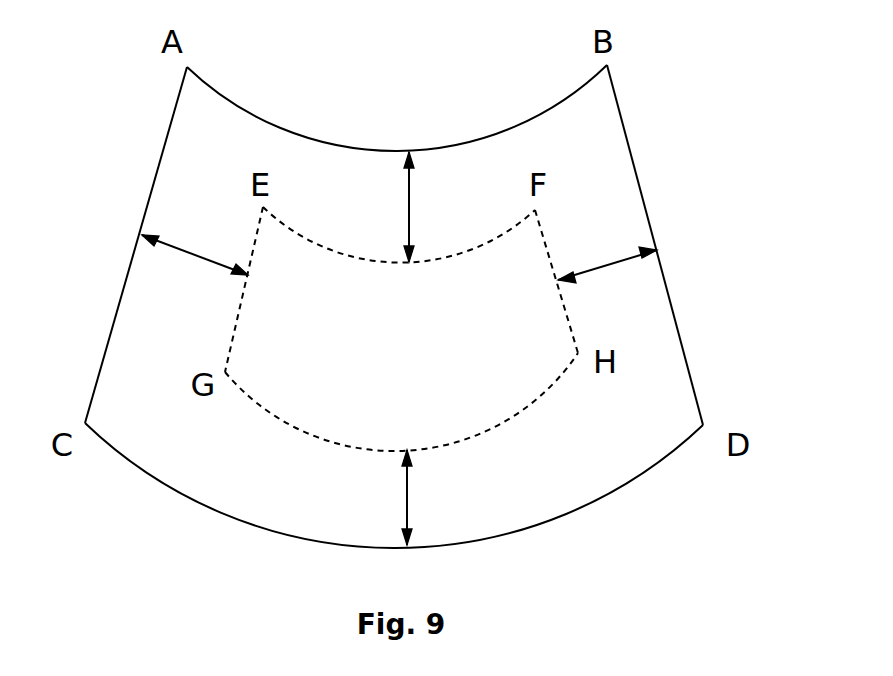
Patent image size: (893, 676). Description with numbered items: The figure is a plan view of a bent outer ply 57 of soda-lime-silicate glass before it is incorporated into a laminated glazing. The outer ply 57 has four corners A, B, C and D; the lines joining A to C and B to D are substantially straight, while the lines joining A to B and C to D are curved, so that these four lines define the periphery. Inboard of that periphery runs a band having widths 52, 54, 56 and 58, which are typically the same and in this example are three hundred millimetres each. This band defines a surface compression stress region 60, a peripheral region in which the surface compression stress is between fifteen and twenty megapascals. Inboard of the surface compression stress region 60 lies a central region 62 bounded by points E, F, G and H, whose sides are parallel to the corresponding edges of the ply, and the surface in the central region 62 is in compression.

The bent outer ply 57 is at (391, 107).
The surface compression stress region 60 is at (605, 160).
The central region 62 is at (401, 329).
The band width 52 is at (383, 207).
The band width 54 is at (607, 257).
The band width 56 is at (424, 497).
The band width 58 is at (195, 266).